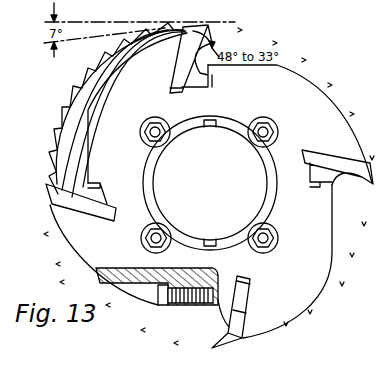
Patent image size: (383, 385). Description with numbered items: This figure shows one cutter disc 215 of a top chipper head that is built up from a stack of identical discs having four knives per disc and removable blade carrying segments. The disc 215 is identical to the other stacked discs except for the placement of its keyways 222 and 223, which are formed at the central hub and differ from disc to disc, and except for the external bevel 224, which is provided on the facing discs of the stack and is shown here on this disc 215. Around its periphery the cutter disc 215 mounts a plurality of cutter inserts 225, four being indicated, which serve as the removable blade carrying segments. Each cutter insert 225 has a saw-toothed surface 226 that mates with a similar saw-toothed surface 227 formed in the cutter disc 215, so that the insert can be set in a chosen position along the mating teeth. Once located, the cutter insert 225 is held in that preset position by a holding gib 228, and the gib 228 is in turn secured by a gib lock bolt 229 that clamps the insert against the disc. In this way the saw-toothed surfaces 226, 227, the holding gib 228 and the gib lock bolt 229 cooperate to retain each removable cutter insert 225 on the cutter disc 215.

The cutter disc 215 is at (302, 287).
The keyway 222 is at (210, 128).
The keyway 223 is at (212, 238).
The external bevel 224 is at (267, 210).
The cutter insert 225 is at (213, 348).
The saw-toothed surface 226 is at (231, 321).
The mating saw-toothed surface 227 is at (242, 320).
The holding gib 228 is at (227, 286).
The gib lock bolt 229 is at (197, 273).